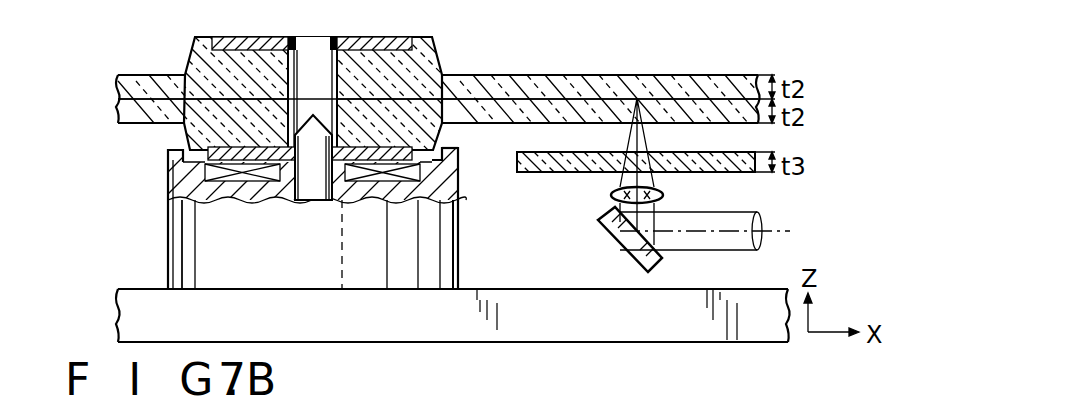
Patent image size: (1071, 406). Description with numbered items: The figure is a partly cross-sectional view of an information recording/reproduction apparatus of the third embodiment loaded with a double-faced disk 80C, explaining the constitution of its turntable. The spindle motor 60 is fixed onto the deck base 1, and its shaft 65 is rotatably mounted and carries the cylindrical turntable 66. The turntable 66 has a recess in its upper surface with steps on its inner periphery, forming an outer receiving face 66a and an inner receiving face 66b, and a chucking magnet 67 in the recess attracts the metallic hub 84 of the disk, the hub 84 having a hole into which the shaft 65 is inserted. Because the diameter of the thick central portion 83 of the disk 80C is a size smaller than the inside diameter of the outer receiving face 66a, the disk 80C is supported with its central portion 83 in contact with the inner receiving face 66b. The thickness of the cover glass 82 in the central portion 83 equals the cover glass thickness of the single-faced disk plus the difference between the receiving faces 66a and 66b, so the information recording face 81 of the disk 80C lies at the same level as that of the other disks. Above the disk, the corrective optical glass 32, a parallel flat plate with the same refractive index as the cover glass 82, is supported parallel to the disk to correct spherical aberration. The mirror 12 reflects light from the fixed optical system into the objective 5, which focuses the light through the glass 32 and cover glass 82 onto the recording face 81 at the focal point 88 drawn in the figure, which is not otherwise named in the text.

The deck base 1 is at (652, 330).
The objective 5 is at (665, 195).
The mirror 12 is at (620, 228).
The corrective optical glass 32 is at (745, 172).
The spindle motor 60 is at (310, 202).
The shaft 65 is at (340, 134).
The turntable 66 is at (455, 238).
The outer receiving face 66a is at (448, 146).
The inner receiving face 66b is at (453, 166).
The chucking magnet 67 is at (197, 200).
The double-faced disk 80C is at (773, 62).
The information recording face 81 is at (676, 97).
The cover glass 82 is at (543, 98).
The thick central portion 83 is at (460, 22).
The metallic hub 84 is at (375, 45).
The light beam 88 is at (637, 97).